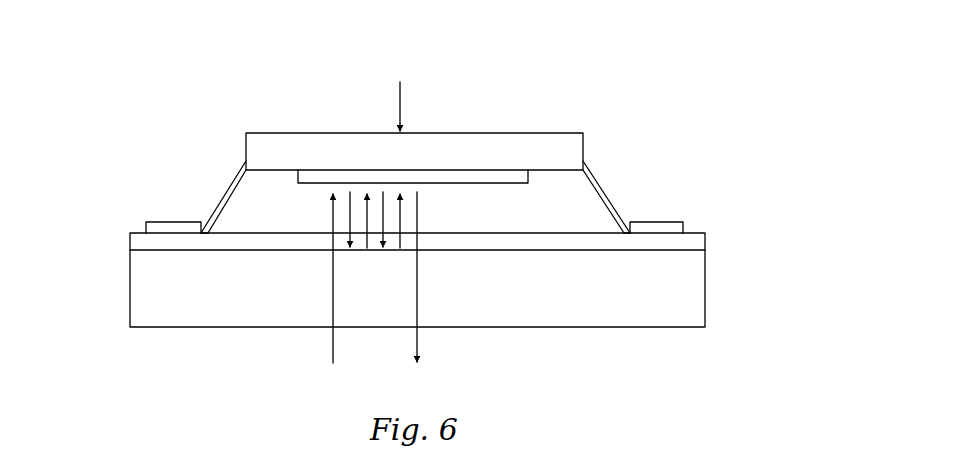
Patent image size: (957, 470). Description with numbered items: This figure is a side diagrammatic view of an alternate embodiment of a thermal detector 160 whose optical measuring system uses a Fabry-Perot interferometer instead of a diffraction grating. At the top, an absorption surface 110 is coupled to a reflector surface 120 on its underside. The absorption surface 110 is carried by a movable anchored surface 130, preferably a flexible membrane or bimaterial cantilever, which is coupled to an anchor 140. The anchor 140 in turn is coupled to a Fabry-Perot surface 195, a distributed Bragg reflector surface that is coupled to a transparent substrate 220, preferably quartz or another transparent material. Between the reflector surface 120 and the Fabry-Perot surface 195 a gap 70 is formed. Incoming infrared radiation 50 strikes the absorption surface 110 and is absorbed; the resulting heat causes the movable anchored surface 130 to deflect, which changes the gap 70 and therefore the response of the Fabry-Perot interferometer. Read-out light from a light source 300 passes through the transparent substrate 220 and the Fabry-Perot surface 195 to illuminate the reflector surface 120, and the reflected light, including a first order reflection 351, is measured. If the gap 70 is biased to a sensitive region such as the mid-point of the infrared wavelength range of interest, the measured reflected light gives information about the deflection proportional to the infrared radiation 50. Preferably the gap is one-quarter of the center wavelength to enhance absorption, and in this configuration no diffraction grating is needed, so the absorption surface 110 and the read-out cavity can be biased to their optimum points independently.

The thermal detector 160 is at (545, 64).
The absorption surface 110 is at (575, 158).
The reflector surface 120 is at (443, 178).
The movable anchored surface 130 is at (225, 196).
The anchor 140 is at (664, 222).
The transparent substrate 220 is at (696, 285).
The Fabry-Perot surface 195 is at (138, 246).
The infrared radiation 50 is at (400, 97).
The gap 70 is at (285, 212).
The light source 300 is at (334, 292).
The first order reflection 351 is at (419, 291).